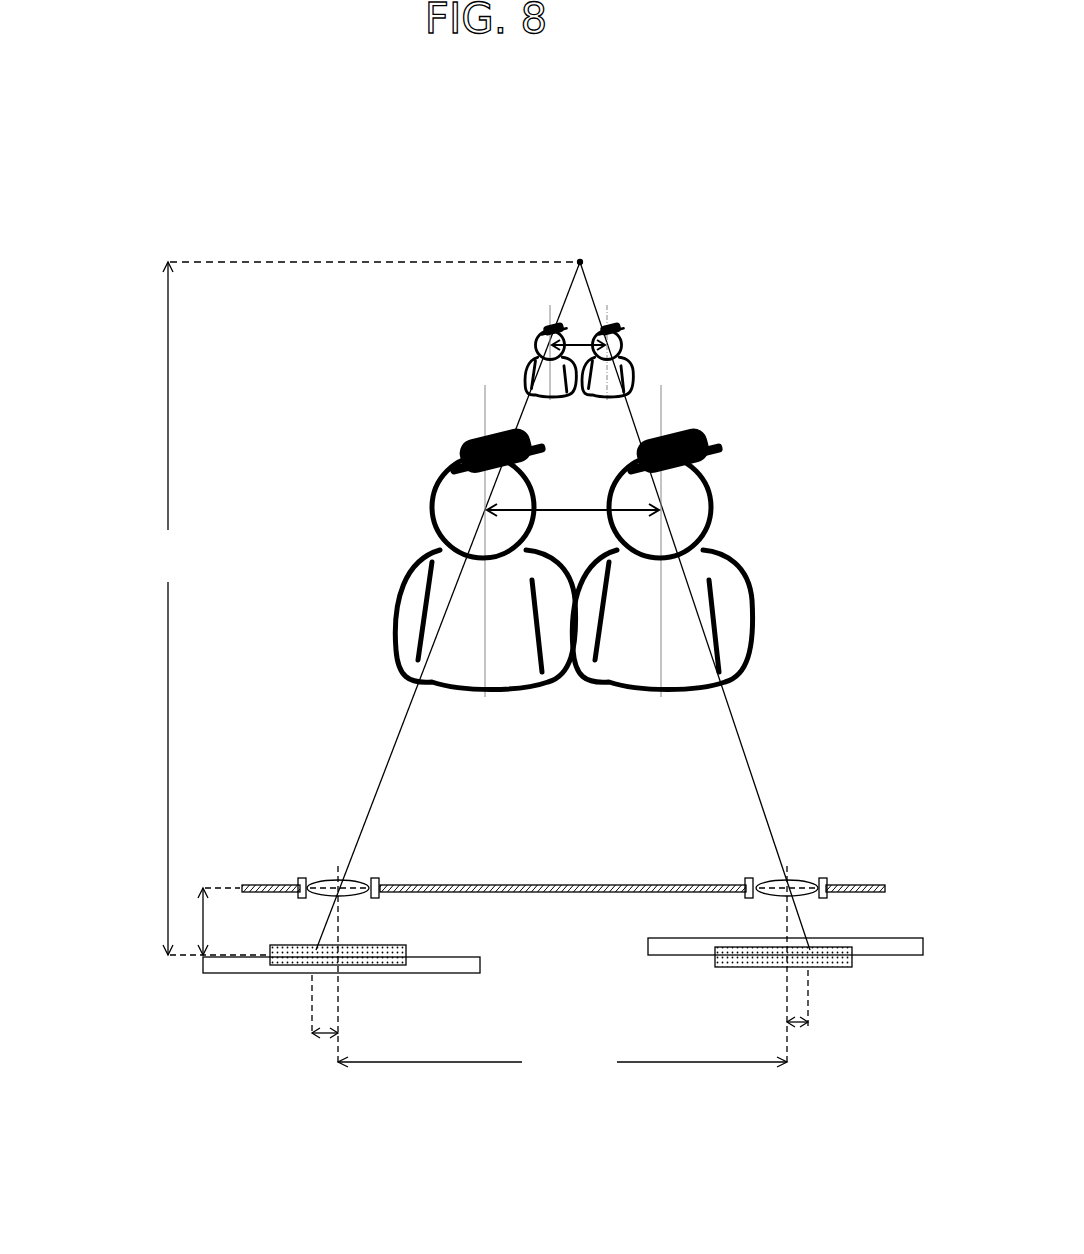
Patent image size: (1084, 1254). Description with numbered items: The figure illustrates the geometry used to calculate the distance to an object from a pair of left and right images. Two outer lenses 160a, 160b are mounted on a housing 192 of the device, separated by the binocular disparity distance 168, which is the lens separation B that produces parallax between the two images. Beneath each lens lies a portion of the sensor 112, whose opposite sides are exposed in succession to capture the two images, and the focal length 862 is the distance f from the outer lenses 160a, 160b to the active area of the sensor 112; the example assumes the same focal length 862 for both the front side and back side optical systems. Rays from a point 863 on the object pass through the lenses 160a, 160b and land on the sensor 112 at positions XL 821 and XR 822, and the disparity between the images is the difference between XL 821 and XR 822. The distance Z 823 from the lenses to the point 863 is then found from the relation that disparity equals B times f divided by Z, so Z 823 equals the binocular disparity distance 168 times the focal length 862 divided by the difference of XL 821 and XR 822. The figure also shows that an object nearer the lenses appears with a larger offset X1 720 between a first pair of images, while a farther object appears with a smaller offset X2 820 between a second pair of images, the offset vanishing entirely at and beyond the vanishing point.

The point 863 is at (580, 250).
The distance Z 823 is at (363, 608).
The offset X1 720 is at (582, 508).
The offset X2 820 is at (578, 338).
The housing 192 is at (517, 893).
The outer lens 160a is at (320, 882).
The outer lens 160b is at (800, 882).
The sensor 112 is at (270, 960).
The focal length f 862 is at (203, 920).
The XL 821 is at (325, 1035).
The XR 822 is at (797, 1026).
The binocular disparity distance 168 is at (562, 1073).